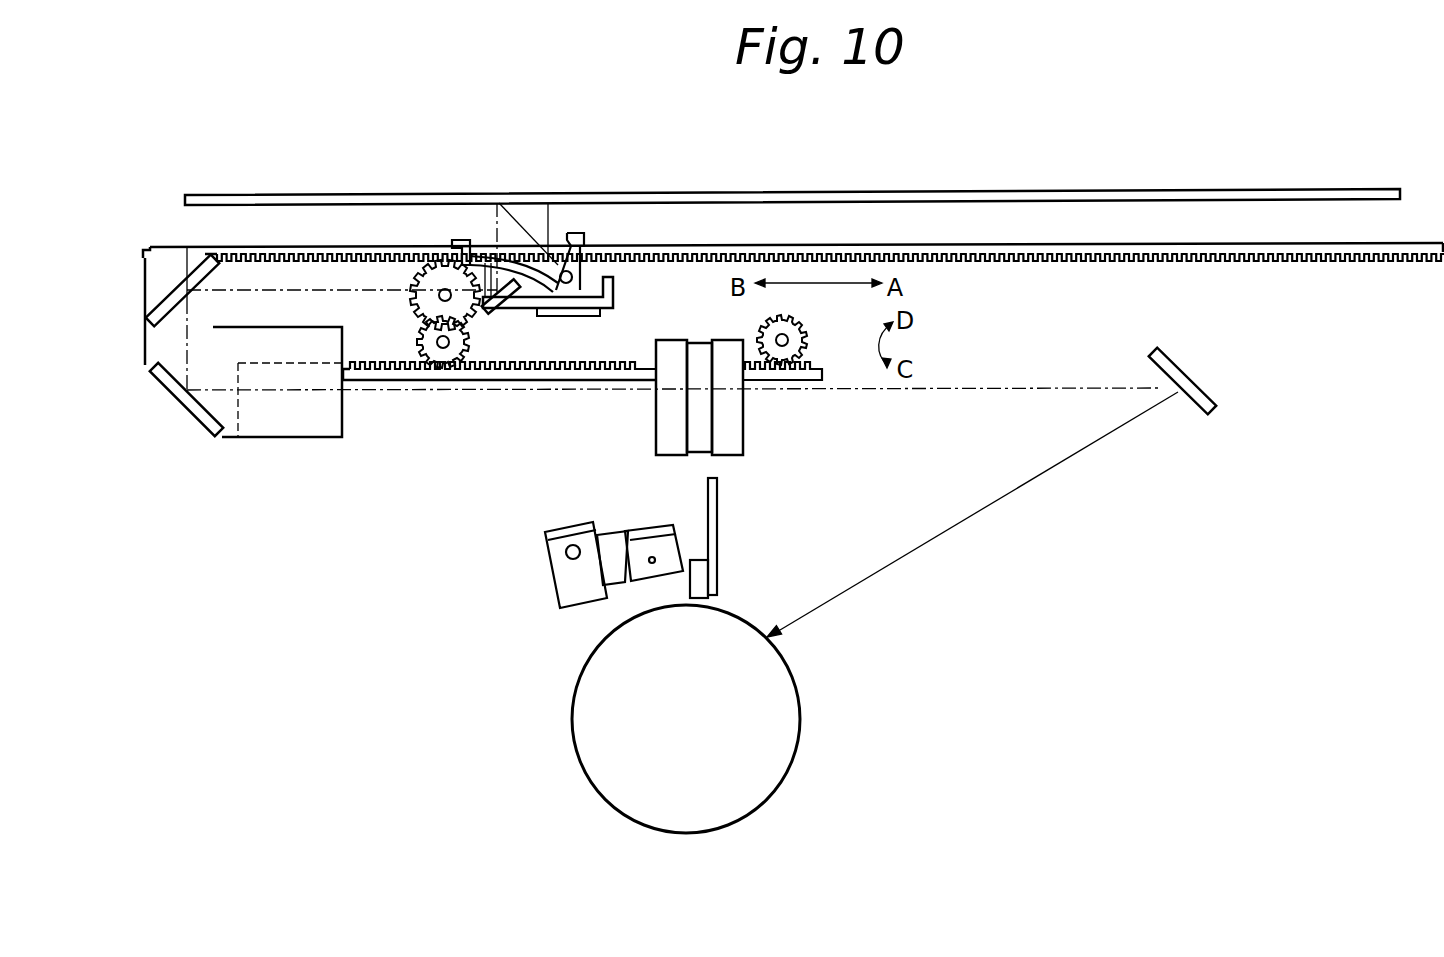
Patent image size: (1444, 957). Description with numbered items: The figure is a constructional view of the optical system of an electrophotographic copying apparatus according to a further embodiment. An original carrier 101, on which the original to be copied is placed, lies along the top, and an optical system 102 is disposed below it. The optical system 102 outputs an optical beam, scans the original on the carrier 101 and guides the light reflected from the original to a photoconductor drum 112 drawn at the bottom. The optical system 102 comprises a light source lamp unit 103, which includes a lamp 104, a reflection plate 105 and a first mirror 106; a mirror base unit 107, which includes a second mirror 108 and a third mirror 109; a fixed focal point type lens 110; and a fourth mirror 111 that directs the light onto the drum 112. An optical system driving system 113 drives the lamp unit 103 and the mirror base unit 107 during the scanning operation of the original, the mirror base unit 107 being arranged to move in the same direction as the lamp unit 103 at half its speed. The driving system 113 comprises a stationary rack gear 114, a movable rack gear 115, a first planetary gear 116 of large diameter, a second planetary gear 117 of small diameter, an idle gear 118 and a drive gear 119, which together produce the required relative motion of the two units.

The original carrier 101 is at (333, 194).
The optical system 102 is at (204, 453).
The light source lamp unit 103 is at (617, 297).
The lamp 104 is at (547, 257).
The reflection plate 105 is at (579, 248).
The first mirror 106 is at (517, 256).
The mirror base unit 107 is at (145, 343).
The second mirror 108 is at (167, 302).
The third mirror 109 is at (170, 393).
The fixed focal point type lens 110 is at (652, 418).
The fourth mirror 111 is at (1198, 393).
The photoconductor drum 112 is at (790, 722).
The optical system driving system 113 is at (828, 228).
The stationary rack gear 114 is at (723, 245).
The movable rack gear 115 is at (517, 380).
The first planetary gear 116 is at (413, 297).
The second planetary gear 117 is at (423, 335).
The idle gear 118 is at (440, 367).
The drive gear 119 is at (797, 340).